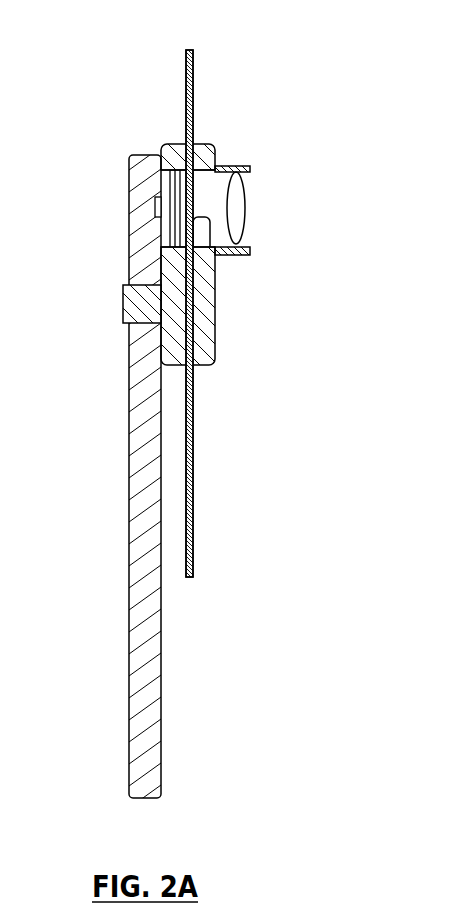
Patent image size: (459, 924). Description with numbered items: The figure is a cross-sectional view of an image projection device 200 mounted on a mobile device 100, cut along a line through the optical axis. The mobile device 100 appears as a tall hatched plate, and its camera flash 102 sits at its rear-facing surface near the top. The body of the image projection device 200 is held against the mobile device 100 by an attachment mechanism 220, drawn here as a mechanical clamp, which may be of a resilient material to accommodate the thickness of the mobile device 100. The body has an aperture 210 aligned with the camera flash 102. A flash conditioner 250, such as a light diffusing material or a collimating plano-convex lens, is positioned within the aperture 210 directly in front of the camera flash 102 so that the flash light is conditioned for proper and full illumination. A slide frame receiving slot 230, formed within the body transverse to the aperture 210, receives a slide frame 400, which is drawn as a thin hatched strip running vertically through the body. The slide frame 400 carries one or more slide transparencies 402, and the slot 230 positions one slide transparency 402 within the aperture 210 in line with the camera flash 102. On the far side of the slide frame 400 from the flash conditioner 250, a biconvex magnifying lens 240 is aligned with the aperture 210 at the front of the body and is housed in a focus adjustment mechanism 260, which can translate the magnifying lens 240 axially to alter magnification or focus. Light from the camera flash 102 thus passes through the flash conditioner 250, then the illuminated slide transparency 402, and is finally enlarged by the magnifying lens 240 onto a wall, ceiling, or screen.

The mobile device 100 is at (128, 572).
The camera flash 102 is at (155, 208).
The image projection device 200 is at (218, 340).
The aperture 210 is at (208, 185).
The attachment mechanism 220 is at (122, 318).
The slide frame receiving slot 230 is at (197, 143).
The magnifying lens 240 is at (250, 206).
The flash conditioner 250 is at (165, 192).
The focus adjustment mechanism 260 is at (243, 163).
The slide frame 400 is at (186, 52).
The slide transparency 402 is at (186, 91).